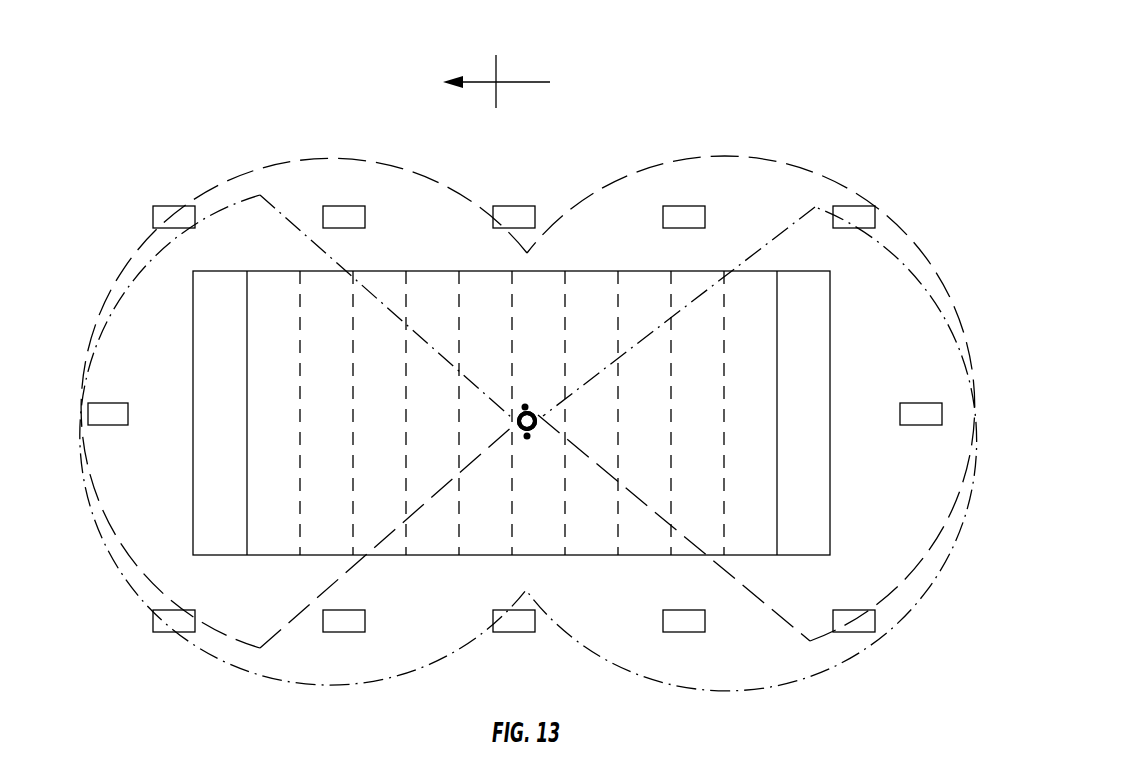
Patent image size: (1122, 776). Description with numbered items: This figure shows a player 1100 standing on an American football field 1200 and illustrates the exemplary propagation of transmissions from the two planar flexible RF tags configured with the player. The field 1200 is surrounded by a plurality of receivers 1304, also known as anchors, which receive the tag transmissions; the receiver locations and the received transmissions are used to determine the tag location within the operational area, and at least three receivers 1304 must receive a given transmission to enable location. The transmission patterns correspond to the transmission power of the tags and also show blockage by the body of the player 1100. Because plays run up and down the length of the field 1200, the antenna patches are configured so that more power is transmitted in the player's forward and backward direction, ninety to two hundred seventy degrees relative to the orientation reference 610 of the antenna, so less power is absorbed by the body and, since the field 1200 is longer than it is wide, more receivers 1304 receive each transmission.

The orientation reference 610 is at (482, 81).
The American football field 1200 is at (172, 287).
The receivers 1304 is at (533, 206).
The player 1100 is at (540, 419).